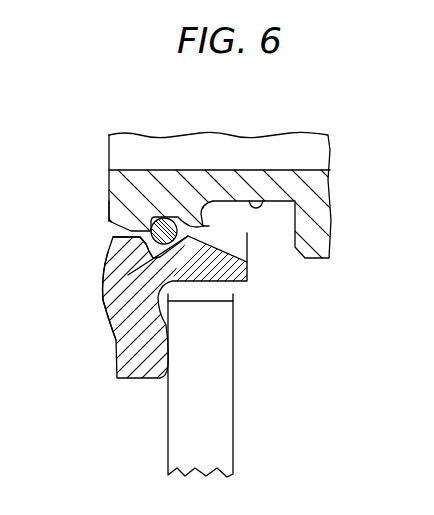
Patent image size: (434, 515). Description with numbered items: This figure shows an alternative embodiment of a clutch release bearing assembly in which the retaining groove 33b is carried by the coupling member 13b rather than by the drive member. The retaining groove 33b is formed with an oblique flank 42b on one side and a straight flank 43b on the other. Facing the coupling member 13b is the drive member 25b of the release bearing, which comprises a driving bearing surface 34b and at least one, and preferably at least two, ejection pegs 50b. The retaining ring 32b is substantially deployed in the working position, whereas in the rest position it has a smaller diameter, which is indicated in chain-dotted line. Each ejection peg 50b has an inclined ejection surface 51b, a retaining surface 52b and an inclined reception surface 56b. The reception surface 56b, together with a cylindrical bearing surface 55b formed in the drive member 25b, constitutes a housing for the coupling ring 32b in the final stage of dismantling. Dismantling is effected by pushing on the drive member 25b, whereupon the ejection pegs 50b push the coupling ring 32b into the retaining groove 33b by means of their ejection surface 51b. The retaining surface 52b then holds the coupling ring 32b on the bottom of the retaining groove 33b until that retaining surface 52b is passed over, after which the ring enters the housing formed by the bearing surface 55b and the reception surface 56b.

The coupling member 13b is at (113, 381).
The drive member 25b is at (330, 188).
The retaining ring 32b is at (146, 226).
The retaining groove 33b is at (130, 273).
The driving bearing surface 34b is at (172, 218).
The oblique flank 42b is at (114, 302).
The straight flank 43b is at (112, 248).
The ejection peg 50b is at (203, 227).
The inclined ejection surface 51b is at (193, 238).
The retaining surface 52b is at (232, 285).
The cylindrical bearing surface 55b is at (262, 199).
The inclined reception surface 56b is at (200, 210).